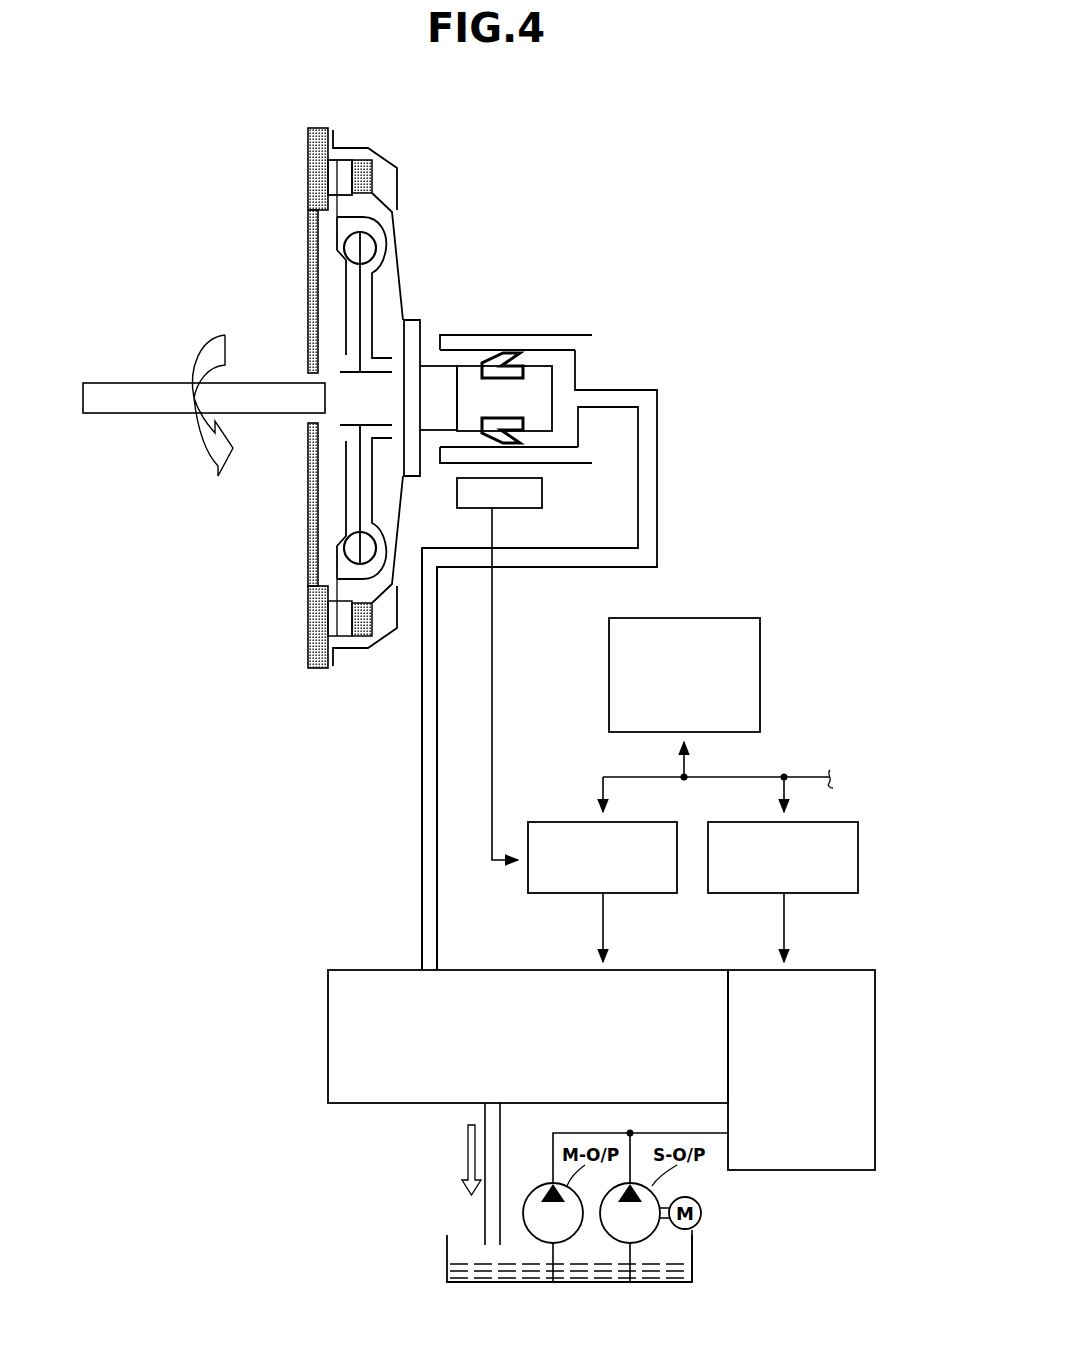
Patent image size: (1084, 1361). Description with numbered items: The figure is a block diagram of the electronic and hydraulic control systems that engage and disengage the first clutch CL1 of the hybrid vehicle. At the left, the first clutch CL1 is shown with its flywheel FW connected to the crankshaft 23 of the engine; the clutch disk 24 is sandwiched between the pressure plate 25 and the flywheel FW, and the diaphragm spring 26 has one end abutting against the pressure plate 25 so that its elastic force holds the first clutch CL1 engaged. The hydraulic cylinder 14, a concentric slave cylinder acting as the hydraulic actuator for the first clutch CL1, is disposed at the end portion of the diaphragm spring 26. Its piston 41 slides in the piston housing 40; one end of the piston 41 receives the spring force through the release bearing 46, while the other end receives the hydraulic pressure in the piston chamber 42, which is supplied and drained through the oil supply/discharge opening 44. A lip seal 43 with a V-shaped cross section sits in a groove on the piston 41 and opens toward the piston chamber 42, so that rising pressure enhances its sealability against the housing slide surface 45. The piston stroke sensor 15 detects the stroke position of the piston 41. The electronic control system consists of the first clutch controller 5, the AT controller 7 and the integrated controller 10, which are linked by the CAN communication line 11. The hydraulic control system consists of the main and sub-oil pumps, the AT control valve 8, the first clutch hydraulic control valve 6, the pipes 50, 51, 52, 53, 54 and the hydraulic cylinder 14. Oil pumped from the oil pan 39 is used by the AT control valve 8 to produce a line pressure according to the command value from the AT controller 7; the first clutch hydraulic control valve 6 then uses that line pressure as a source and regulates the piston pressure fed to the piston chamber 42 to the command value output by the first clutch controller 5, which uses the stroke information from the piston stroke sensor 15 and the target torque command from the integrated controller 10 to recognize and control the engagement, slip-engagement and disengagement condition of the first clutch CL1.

The flywheel FW is at (307, 160).
The first clutch CL1 is at (412, 96).
The crankshaft 23 is at (142, 382).
The clutch disk 24 is at (347, 152).
The pressure plate 25 is at (382, 171).
The diaphragm spring 26 is at (402, 260).
The hydraulic cylinder 14 is at (592, 287).
The piston housing 40 is at (468, 334).
The piston 41 is at (465, 388).
The piston chamber 42 is at (560, 402).
The lip seal 43 is at (516, 441).
The oil supply/discharge opening 44 is at (578, 397).
The housing slide surface 45 is at (474, 440).
The release bearing 46 is at (407, 480).
The piston stroke sensor 15 is at (542, 492).
The pipe 50 is at (420, 816).
The pipe 51 is at (429, 759).
The pipe 52 is at (429, 759).
The pipe 53 is at (429, 759).
The pipe 54 is at (429, 759).
The integrated controller 10 is at (692, 618).
The CAN communication line 11 is at (634, 776).
The first clutch controller 5 is at (560, 821).
The AT controller 7 is at (745, 821).
The first clutch hydraulic control valve 6 is at (398, 1112).
The AT control valve 8 is at (802, 1180).
The oil pan 39 is at (693, 1270).